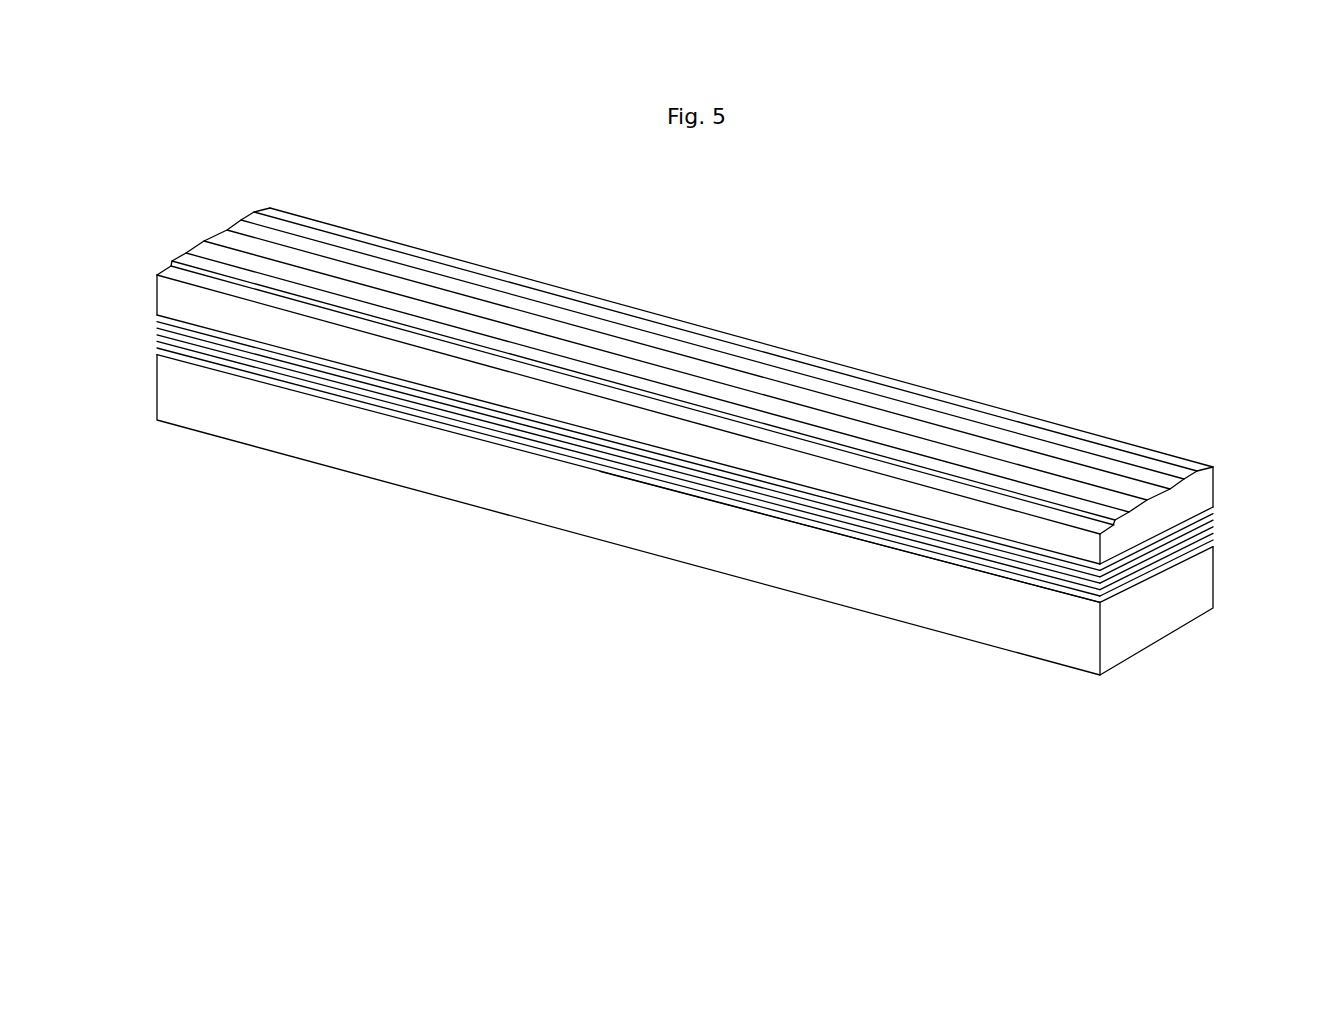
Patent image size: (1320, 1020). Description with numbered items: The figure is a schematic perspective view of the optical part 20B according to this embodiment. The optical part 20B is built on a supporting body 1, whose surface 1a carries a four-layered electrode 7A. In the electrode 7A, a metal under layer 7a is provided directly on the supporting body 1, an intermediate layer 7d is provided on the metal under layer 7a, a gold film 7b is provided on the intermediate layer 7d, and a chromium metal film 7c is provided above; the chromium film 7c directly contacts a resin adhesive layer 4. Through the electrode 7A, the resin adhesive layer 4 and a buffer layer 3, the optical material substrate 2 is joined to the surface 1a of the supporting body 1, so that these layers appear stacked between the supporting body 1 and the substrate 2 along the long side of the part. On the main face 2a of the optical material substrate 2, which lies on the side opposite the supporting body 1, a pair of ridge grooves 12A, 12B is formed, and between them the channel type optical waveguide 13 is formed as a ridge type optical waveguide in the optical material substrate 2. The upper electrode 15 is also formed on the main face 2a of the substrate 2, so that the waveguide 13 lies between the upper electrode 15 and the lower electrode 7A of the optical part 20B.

The supporting body 1 is at (1203, 582).
The surface of the supporting body 1a is at (869, 530).
The optical material substrate 2 is at (1203, 493).
The main face of the optical material substrate 2a is at (1157, 458).
The buffer layer 3 is at (157, 317).
The resin adhesive layer 4 is at (157, 322).
The electrode 7A is at (151, 325).
The metal under layer 7a is at (465, 432).
The gold film 7b is at (575, 455).
The chromium metal film 7c is at (633, 463).
The intermediate layer 7d is at (523, 442).
The ridge groove 12A is at (728, 398).
The ridge groove 12B is at (830, 395).
The channel type optical waveguide 13 is at (618, 348).
The upper electrode 15 is at (1060, 443).
The optical part 20B is at (1250, 412).